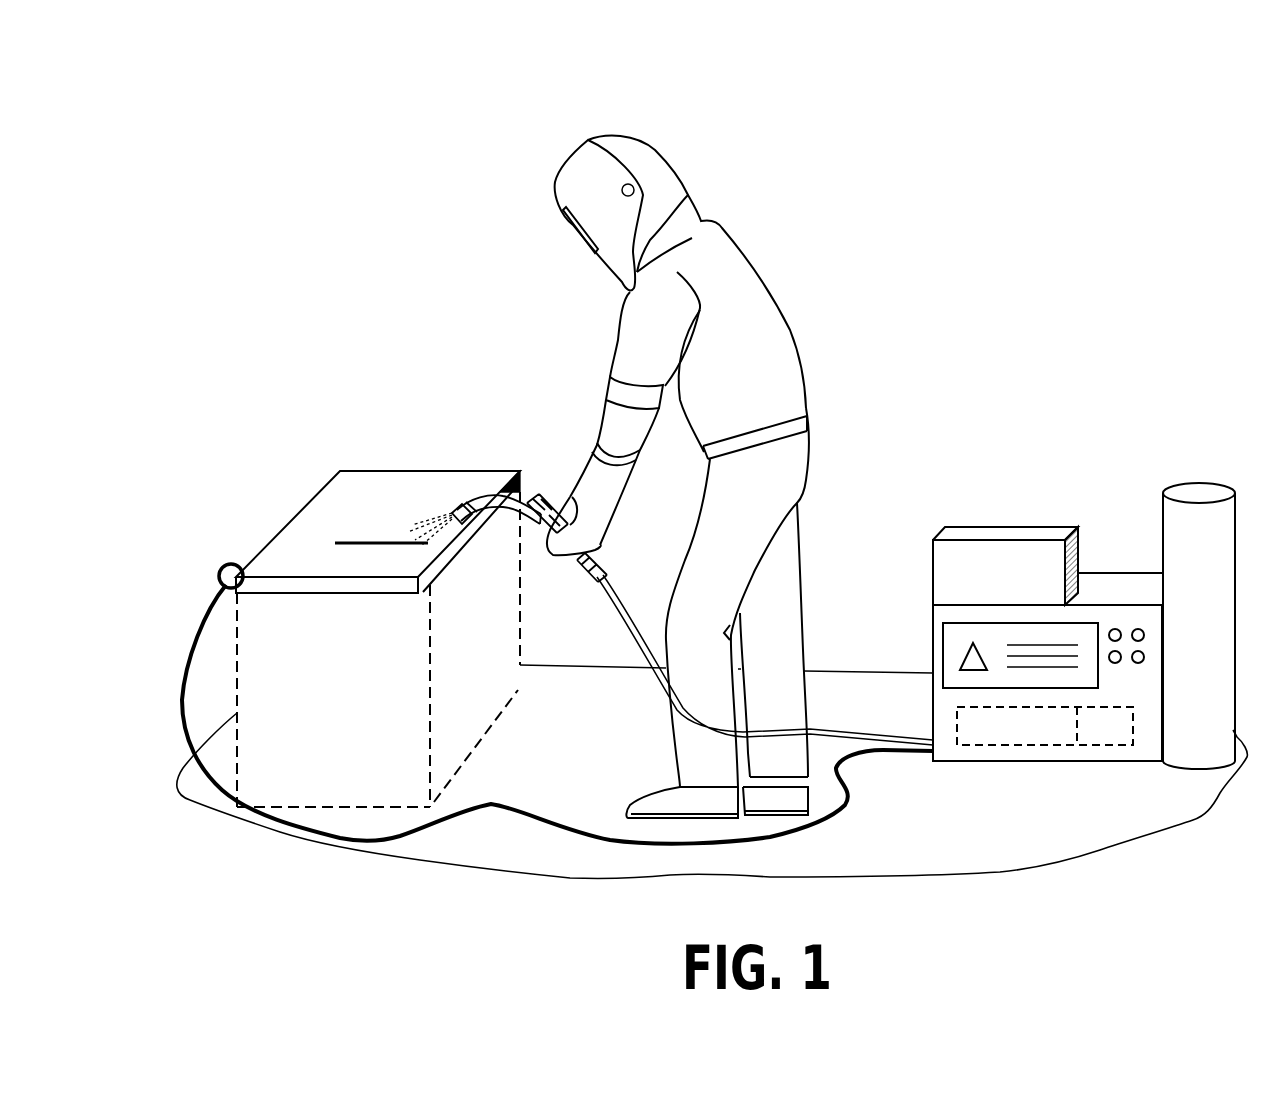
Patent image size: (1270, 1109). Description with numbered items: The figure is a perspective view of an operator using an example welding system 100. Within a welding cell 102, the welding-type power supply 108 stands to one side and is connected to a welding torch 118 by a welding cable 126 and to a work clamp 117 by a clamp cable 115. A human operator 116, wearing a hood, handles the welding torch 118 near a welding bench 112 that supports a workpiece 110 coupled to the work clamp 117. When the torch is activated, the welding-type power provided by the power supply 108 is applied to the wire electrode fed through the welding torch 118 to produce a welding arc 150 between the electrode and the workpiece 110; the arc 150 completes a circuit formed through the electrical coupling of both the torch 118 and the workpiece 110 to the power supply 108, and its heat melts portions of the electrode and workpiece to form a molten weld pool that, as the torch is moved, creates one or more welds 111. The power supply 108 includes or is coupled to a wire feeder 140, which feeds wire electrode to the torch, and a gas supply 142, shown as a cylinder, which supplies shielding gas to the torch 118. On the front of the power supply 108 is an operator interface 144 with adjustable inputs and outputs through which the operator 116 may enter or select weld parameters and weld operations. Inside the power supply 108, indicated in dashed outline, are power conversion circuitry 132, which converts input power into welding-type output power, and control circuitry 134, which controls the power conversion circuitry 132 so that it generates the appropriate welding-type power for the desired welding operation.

The welding system 100 is at (220, 117).
The welding cell 102 is at (1066, 844).
The welding-type power supply 108 is at (941, 499).
The workpiece 110 is at (286, 517).
The weld 111 is at (410, 540).
The welding bench 112 is at (322, 691).
The clamp cable 115 is at (534, 815).
The operator 116 is at (731, 230).
The work clamp 117 is at (246, 566).
The welding torch 118 is at (557, 510).
The welding cable 126 is at (853, 728).
The power conversion circuitry 132 is at (1017, 745).
The control circuitry 134 is at (1100, 745).
The wire feeder 140 is at (980, 588).
The gas supply 142 is at (1180, 641).
The operator interface 144 is at (1108, 612).
The welding arc 150 is at (444, 496).